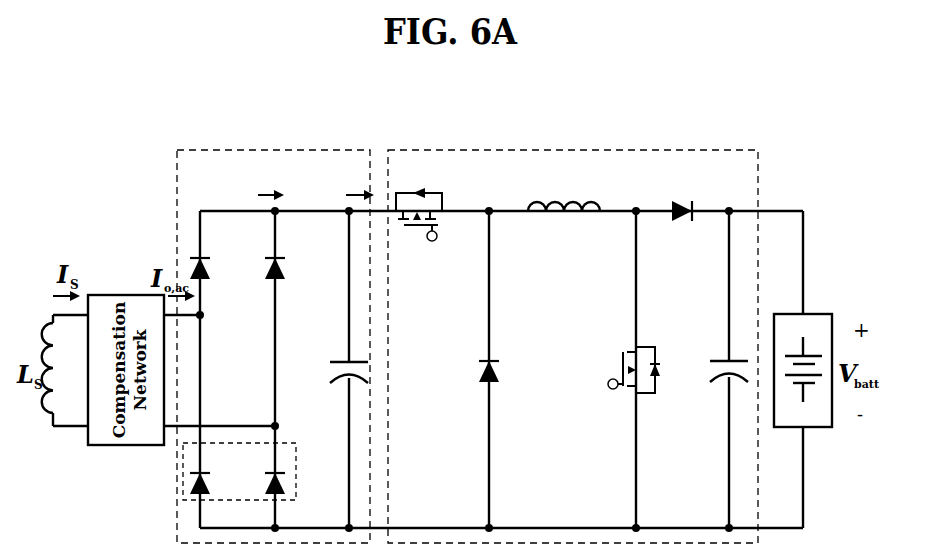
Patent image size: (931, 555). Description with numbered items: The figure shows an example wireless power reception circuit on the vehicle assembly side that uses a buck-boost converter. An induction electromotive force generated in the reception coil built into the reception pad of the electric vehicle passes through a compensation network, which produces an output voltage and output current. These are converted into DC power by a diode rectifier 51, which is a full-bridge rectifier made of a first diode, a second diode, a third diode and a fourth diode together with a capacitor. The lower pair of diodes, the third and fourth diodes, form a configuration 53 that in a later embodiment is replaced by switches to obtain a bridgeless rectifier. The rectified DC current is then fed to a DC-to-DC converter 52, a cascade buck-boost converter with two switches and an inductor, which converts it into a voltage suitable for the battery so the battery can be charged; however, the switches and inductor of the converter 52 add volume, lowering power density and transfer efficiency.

The diode rectifier 51 is at (459, 315).
The DC-to-DC converter 52 is at (574, 150).
The configuration comprising the third diode and the fourth diode 53 is at (183, 483).